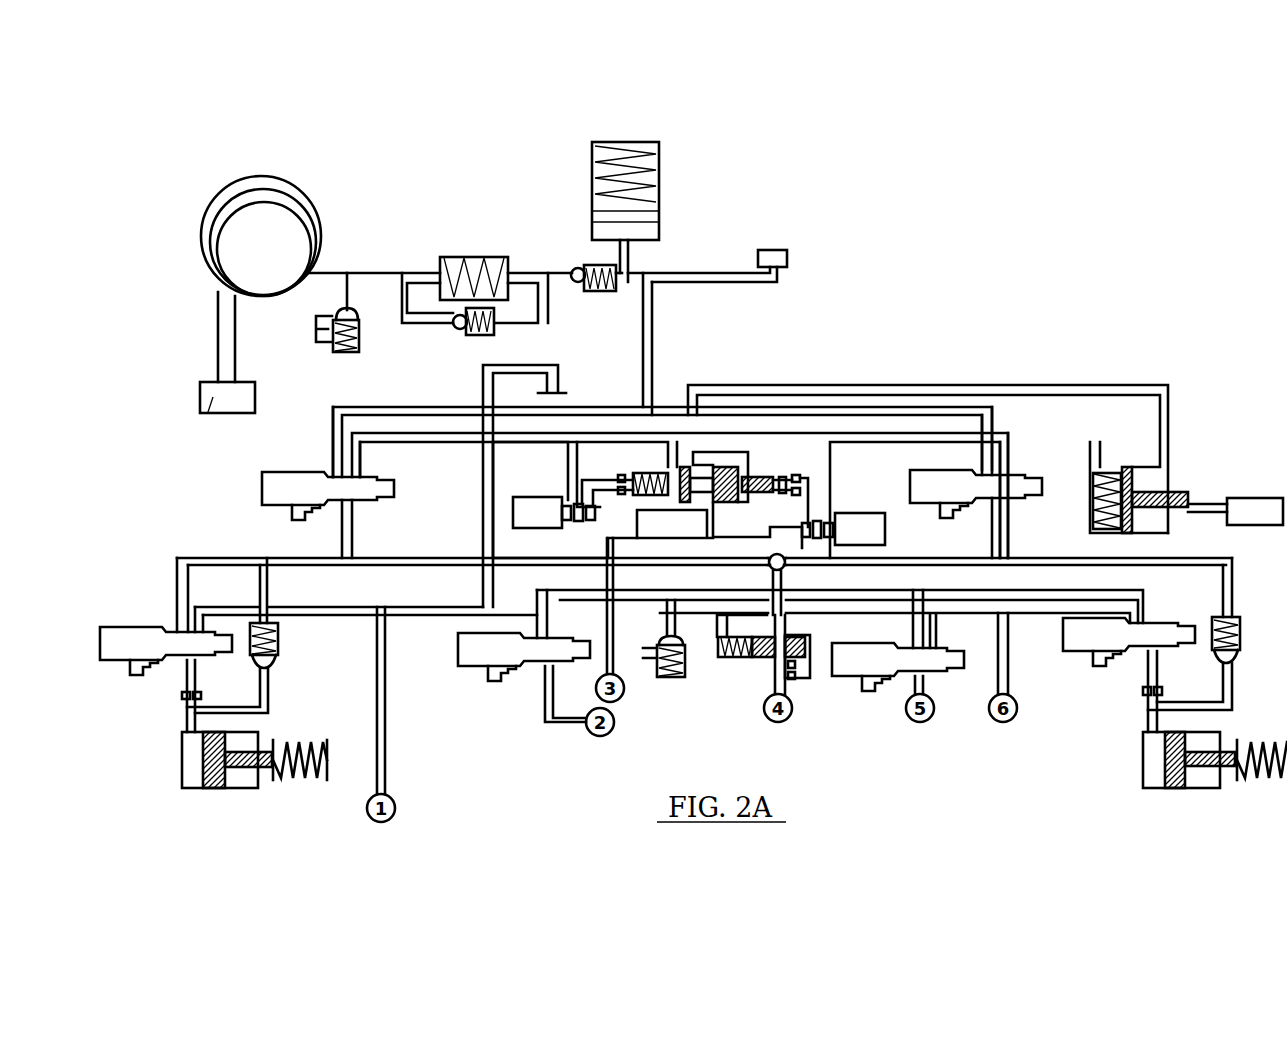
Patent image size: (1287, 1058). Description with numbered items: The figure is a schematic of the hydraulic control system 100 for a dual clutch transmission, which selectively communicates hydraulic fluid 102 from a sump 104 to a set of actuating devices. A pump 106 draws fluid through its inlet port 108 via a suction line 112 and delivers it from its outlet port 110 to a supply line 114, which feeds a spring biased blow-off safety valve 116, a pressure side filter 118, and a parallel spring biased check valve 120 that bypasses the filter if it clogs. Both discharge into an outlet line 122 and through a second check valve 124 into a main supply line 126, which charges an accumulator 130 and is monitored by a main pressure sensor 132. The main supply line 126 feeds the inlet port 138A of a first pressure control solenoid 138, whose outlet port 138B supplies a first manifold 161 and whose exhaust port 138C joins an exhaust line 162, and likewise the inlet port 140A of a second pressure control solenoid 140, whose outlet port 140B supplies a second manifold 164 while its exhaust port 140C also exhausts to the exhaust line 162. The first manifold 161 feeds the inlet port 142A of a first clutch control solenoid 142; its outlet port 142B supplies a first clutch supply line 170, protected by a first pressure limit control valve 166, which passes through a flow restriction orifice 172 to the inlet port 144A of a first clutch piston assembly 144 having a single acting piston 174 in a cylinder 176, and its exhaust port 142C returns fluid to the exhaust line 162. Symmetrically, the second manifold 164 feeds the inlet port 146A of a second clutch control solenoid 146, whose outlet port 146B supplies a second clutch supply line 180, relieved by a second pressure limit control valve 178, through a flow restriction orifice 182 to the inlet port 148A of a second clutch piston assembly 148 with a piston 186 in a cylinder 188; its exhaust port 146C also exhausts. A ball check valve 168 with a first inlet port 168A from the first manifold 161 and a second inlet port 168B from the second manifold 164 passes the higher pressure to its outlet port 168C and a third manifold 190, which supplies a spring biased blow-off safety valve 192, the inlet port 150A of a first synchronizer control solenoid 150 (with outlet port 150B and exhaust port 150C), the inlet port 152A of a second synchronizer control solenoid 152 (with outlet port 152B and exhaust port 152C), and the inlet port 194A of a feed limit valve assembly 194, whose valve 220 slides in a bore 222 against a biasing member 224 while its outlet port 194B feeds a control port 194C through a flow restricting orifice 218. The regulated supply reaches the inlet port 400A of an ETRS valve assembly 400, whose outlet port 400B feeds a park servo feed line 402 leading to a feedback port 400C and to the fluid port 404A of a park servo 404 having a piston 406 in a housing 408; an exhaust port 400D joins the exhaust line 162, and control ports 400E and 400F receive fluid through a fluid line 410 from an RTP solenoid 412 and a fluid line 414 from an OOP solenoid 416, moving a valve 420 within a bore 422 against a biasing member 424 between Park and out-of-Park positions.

The hydraulic control system 100 is at (994, 170).
The hydraulic fluid 102 is at (255, 386).
The sump 104 is at (211, 414).
The pump 106 is at (262, 178).
The inlet port 108 is at (218, 300).
The outlet port 110 is at (321, 258).
The suction line 112 is at (222, 368).
The supply line 114 is at (405, 272).
The spring biased blow-off safety valve 116 is at (330, 348).
The pressure side filter 118 is at (478, 256).
The spring biased check valve 120 is at (470, 338).
The outlet line 122 is at (528, 272).
The second check valve 124 is at (603, 292).
The main supply line 126 is at (655, 342).
The accumulator 130 is at (660, 170).
The main pressure sensor 132 is at (772, 249).
The first pressure control solenoid 138 is at (263, 490).
The inlet port 138A is at (331, 465).
The outlet port 138B is at (356, 508).
The exhaust port 138C is at (364, 452).
The second pressure control solenoid 140 is at (912, 482).
The inlet port 140A is at (980, 468).
The outlet port 140B is at (1008, 505).
The exhaust port 140C is at (1010, 456).
The first clutch control solenoid 142 is at (130, 662).
The inlet port 142A is at (175, 612).
The outlet port 142B is at (185, 690).
The exhaust port 142C is at (210, 618).
The first clutch piston assembly 144 is at (195, 790).
The inlet port 144A is at (185, 728).
The second clutch control solenoid 146 is at (1075, 655).
The inlet port 146A is at (1135, 608).
The outlet port 146B is at (1158, 658).
The exhaust port 146C is at (1160, 604).
The second clutch piston assembly 148 is at (1205, 790).
The inlet port 148A is at (1147, 726).
The first synchronizer control solenoid 150 is at (455, 655).
The inlet port 150A is at (483, 600).
The outlet port 150B is at (545, 688).
The exhaust port 150C is at (565, 500).
The second synchronizer control solenoid 152 is at (872, 680).
The inlet port 152A is at (925, 605).
The outlet port 152B is at (924, 680).
The exhaust port 152C is at (932, 638).
The first manifold 161 is at (425, 557).
The exhaust line 162 is at (520, 418).
The second manifold 164 is at (985, 556).
The first pressure limit control valve 166 is at (280, 640).
The ball check valve 168 is at (872, 548).
The first inlet port 168A is at (770, 556).
The second inlet port 168B is at (806, 548).
The outlet port 168C is at (770, 574).
The first clutch supply line 170 is at (272, 685).
The flow restriction orifice 172 is at (202, 697).
The single acting piston 174 is at (250, 770).
The cylinder 176 is at (190, 776).
The second pressure limit control valve 178 is at (1240, 626).
The second clutch supply line 180 is at (1236, 695).
The flow restriction orifice 182 is at (1142, 690).
The single acting piston 186 is at (1238, 745).
The cylinder 188 is at (1150, 766).
The third manifold 190 is at (890, 588).
The spring biased blow-off safety valve 192 is at (665, 680).
The feed limit valve assembly 194 is at (747, 690).
The inlet port 194A is at (790, 635).
The outlet port 194B is at (774, 660).
The control port 194C is at (797, 665).
The flow restricting orifice 218 is at (795, 680).
The valve 220 is at (740, 660).
The bore 222 is at (728, 658).
The biasing member 224 is at (720, 636).
The ETRS valve assembly 400 is at (735, 455).
The inlet port 400A is at (720, 505).
The outlet port 400B is at (695, 468).
The feedback port 400C is at (740, 468).
The exhaust port 400D is at (690, 465).
The control port 400E is at (680, 470).
The control port 400F is at (775, 478).
The park servo feed line 402 is at (918, 384).
The park servo 404 is at (1112, 462).
The fluid port 404A is at (1170, 458).
The piston 406 is at (1210, 502).
The housing 408 is at (1165, 536).
The fluid line 410 is at (582, 480).
The RTP solenoid 412 is at (554, 512).
The fluid line 414 is at (810, 492).
The OOP solenoid 416 is at (843, 529).
The valve 420 is at (726, 452).
The bore 422 is at (640, 555).
The biasing member 424 is at (637, 512).